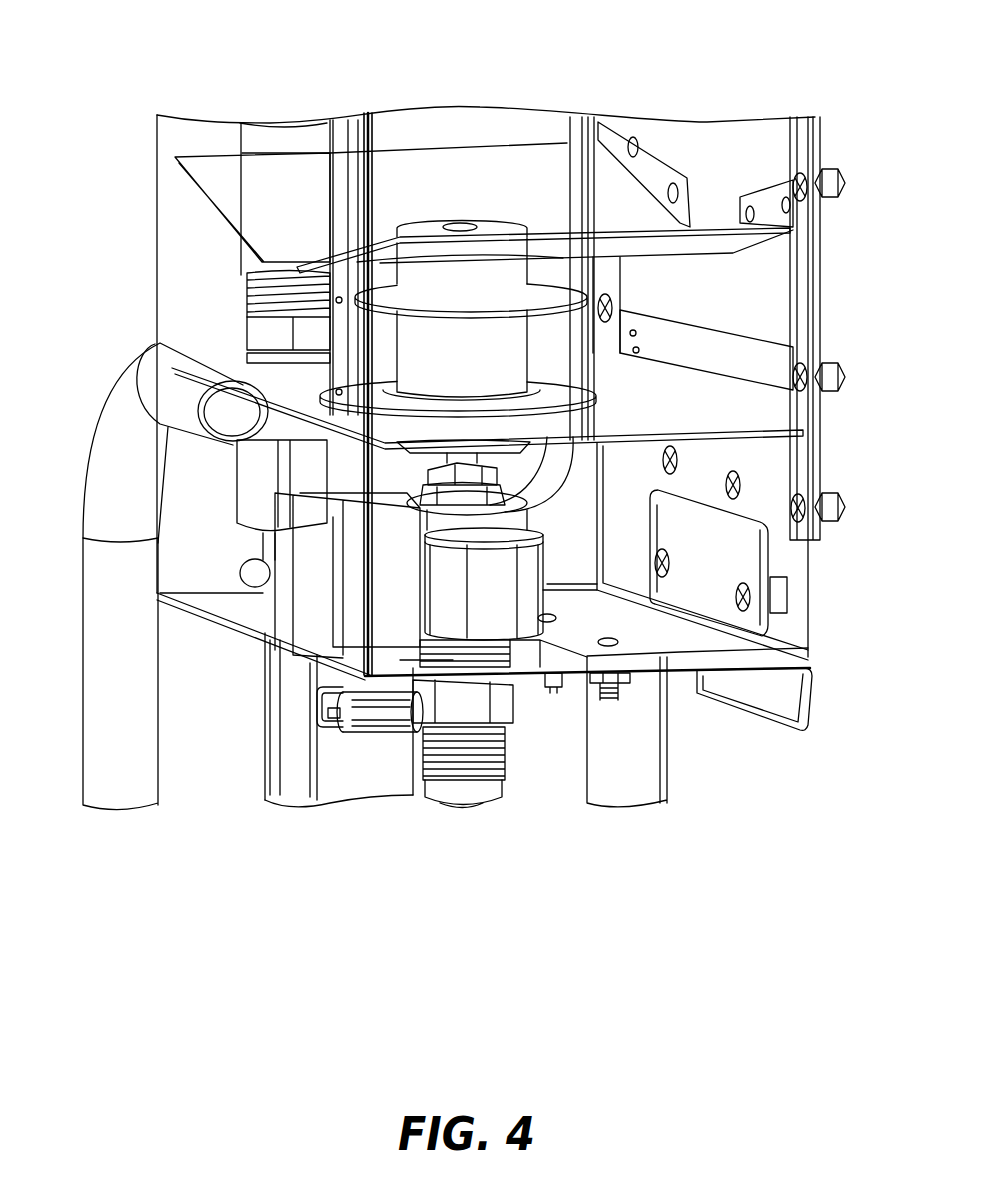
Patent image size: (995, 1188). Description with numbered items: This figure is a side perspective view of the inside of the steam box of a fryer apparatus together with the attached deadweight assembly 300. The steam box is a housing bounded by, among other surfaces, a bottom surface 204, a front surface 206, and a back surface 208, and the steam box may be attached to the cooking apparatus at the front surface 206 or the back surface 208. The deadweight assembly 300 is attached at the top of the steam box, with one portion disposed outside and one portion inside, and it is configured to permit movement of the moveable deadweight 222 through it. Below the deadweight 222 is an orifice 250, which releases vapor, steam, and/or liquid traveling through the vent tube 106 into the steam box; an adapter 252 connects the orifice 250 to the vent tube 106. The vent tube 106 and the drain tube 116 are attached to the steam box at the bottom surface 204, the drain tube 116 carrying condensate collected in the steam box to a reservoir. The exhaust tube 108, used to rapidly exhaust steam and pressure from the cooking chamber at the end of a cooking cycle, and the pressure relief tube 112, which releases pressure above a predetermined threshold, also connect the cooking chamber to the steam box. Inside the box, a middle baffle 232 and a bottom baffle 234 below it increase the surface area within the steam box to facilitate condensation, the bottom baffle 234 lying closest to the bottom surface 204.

The vent tube 106 is at (463, 810).
The exhaust tube 108 is at (115, 747).
The pressure relief tube 112 is at (260, 290).
The drain tube 116 is at (353, 768).
The bottom surface 204 is at (683, 673).
The front surface 206 is at (173, 141).
The back surface 208 is at (765, 286).
The deadweight 222 is at (470, 362).
The middle baffle 232 is at (240, 190).
The bottom baffle 234 is at (245, 384).
The orifice 250 is at (463, 478).
The adapter 252 is at (502, 598).
The deadweight assembly 300 is at (577, 132).